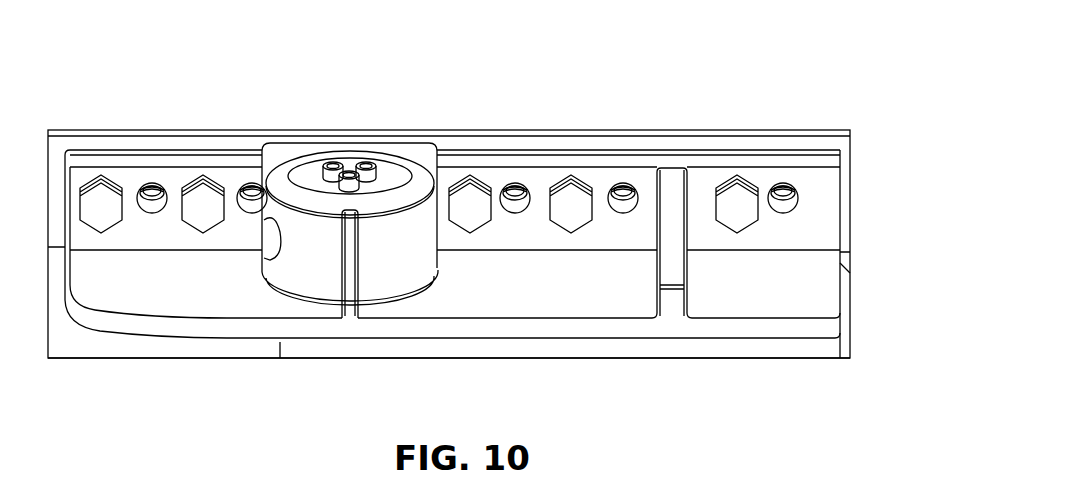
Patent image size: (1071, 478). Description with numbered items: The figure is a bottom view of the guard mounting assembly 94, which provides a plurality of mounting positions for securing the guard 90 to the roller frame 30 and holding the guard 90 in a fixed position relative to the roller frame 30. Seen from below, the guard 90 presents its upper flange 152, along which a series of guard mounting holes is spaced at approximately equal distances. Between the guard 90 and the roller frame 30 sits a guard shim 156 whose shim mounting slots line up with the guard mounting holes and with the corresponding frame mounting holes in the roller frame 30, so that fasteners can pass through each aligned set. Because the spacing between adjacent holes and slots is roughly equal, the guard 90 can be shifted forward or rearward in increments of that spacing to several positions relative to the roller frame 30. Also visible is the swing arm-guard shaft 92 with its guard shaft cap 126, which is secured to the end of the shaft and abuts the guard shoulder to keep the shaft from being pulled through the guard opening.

The roller frame 30 is at (818, 142).
The guard 90 is at (800, 330).
The swing arm-guard shaft 92 is at (350, 199).
The guard mounting assembly 94 is at (689, 47).
The guard shaft cap 126 is at (313, 176).
The upper flange 152 is at (834, 185).
The guard shim 156 is at (78, 150).